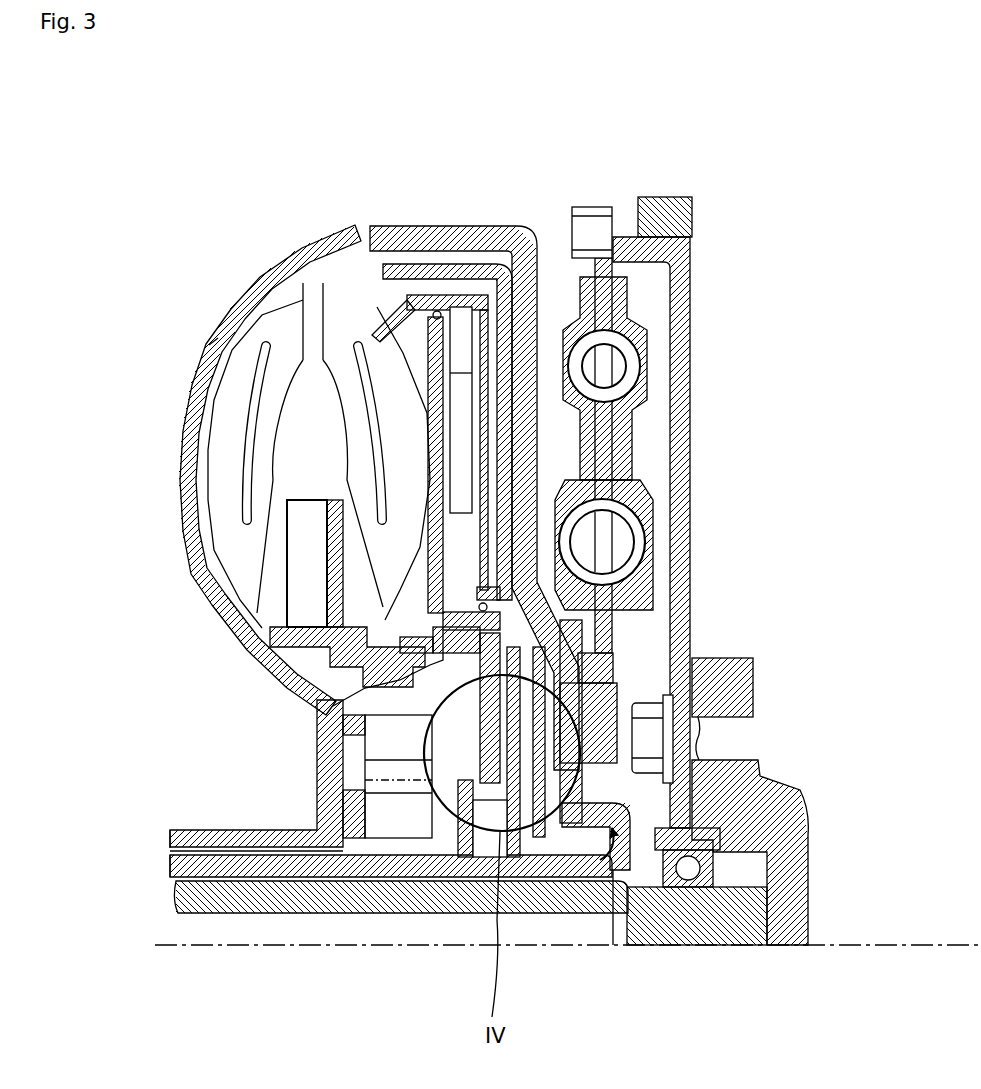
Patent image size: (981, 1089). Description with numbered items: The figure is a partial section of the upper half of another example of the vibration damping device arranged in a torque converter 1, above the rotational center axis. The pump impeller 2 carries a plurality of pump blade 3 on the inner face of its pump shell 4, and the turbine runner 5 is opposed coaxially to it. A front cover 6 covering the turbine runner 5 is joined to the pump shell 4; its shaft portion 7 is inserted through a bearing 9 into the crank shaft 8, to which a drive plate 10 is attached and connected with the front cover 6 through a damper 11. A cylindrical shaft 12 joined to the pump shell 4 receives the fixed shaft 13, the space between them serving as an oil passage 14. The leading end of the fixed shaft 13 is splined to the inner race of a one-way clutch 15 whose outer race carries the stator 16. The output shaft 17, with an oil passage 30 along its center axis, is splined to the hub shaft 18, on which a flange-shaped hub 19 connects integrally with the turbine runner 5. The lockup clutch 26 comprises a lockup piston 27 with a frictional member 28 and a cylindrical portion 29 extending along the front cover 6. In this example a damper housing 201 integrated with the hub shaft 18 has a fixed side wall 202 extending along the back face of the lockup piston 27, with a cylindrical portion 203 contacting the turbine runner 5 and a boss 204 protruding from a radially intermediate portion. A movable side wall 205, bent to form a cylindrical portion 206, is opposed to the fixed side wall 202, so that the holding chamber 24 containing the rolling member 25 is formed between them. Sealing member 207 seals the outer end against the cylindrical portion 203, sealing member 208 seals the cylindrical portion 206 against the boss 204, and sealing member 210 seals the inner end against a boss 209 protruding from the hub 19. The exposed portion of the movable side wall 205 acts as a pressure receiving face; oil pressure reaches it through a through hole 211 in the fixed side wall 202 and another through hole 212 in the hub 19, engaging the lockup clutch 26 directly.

The torque converter 1 is at (210, 317).
The pump impeller 2 is at (195, 363).
The pump blade 3 is at (222, 415).
The pump shell 4 is at (190, 388).
The turbine runner 5 is at (307, 423).
The front cover 6 is at (422, 225).
The shaft portion 7 is at (677, 940).
The crank shaft 8 is at (755, 783).
The bearing 9 is at (700, 868).
The drive plate 10 is at (690, 278).
The damper 11 is at (640, 330).
The cylindrical shaft 12 is at (170, 832).
The fixed shaft 13 is at (185, 867).
The oil passage 14 is at (260, 848).
The one-way clutch 15 is at (377, 755).
The stator 16 is at (307, 565).
The output shaft 17 is at (240, 900).
The hub shaft 18 is at (575, 865).
The hub 19 is at (465, 845).
The holding chamber 24 is at (307, 603).
The rolling member 25 is at (484, 470).
The lockup clutch 26 is at (640, 474).
The lockup piston 27 is at (520, 468).
The frictional member 28 is at (540, 240).
The cylindrical portion 29 is at (392, 265).
The oil passage 30 is at (308, 930).
The damper housing 201 is at (462, 340).
The fixed side wall 202 is at (345, 712).
The cylindrical portion 203 is at (400, 297).
The boss 204 is at (483, 603).
The movable side wall 205 is at (390, 325).
The cylindrical portion 206 is at (355, 688).
The sealing member 207 is at (437, 312).
The sealing member 208 is at (500, 607).
The boss 209 is at (560, 762).
The sealing member 210 is at (587, 677).
The through hole 211 is at (570, 780).
The through hole 212 is at (400, 855).